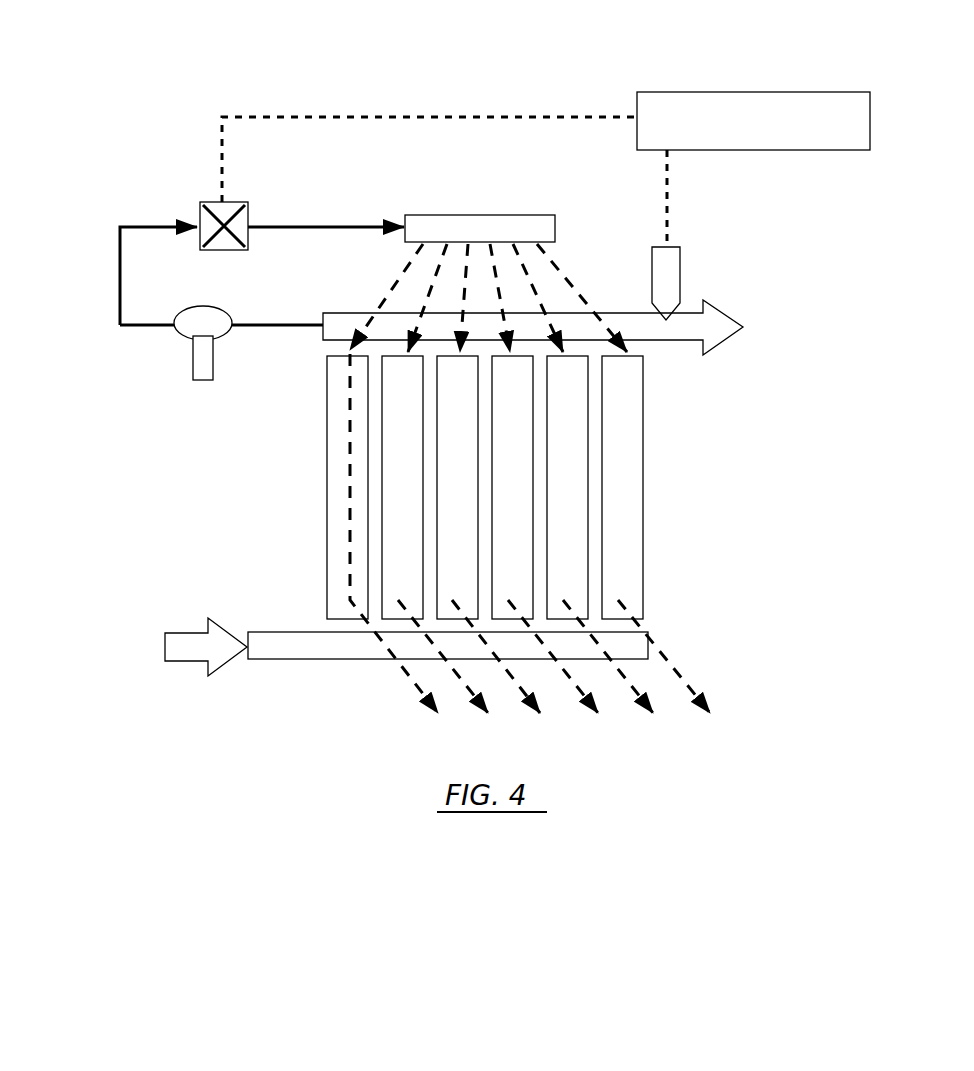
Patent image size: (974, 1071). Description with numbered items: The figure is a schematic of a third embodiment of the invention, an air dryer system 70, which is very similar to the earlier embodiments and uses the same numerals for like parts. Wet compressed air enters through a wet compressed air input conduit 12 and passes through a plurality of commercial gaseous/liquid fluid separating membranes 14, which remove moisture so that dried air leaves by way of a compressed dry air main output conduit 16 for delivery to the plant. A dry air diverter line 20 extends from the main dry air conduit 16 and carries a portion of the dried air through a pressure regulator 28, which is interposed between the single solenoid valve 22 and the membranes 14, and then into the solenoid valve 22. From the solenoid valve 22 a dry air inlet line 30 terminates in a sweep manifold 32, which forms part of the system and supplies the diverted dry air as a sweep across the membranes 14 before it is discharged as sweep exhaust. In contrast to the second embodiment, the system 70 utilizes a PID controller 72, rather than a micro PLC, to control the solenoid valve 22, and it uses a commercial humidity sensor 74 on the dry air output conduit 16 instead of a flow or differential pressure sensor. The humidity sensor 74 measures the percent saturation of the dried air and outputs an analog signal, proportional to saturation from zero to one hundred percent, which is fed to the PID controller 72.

The wet compressed air input conduit 12 is at (290, 660).
The gaseous/liquid fluid separating membranes 14 is at (523, 410).
The compressed dry air main output conduit 16 is at (667, 340).
The dry air diverter line 20 is at (277, 325).
The solenoid valve 22 is at (222, 251).
The pressure regulator 28 is at (203, 381).
The dry air inlet line 30 is at (321, 226).
The sweep manifold 32 is at (556, 227).
The air dryer system 70 is at (437, 91).
The PID controller 72 is at (723, 92).
The humidity sensor 74 is at (680, 285).